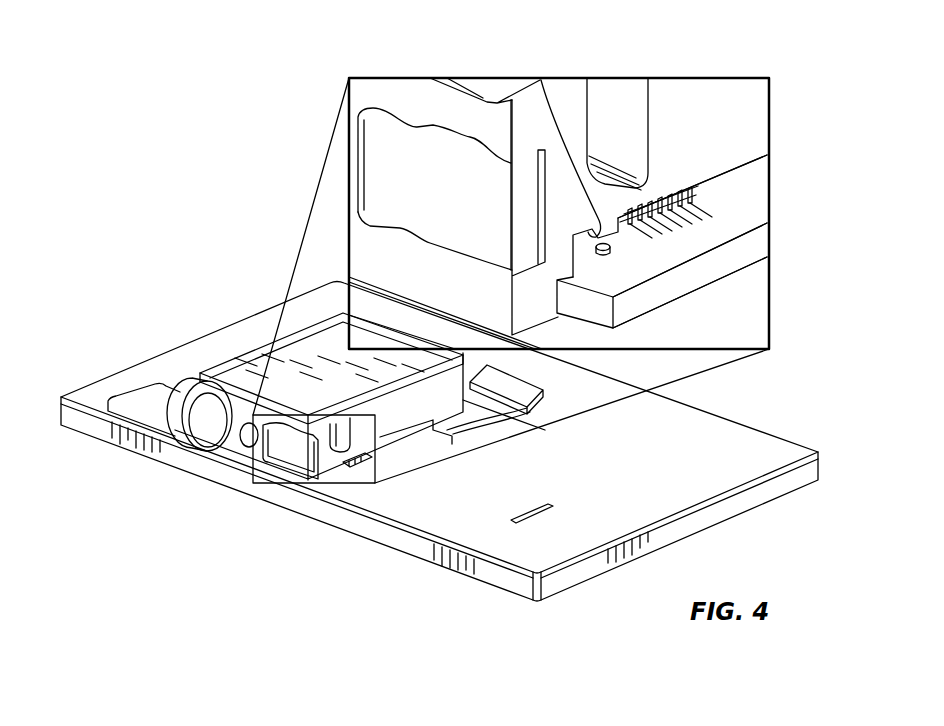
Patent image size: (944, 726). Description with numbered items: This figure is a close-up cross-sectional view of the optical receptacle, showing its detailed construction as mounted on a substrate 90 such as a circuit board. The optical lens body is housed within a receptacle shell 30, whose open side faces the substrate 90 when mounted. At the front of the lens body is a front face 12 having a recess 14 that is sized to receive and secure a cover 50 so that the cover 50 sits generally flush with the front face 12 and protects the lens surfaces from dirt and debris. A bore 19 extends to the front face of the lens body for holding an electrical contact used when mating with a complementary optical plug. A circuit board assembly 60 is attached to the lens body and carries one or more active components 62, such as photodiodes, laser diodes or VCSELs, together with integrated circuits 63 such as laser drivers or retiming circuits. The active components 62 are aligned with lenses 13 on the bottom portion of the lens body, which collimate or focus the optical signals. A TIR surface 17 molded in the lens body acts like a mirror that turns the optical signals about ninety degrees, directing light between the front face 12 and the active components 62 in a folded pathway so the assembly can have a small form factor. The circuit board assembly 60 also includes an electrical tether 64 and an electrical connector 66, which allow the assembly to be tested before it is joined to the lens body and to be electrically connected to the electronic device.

The front face 12 is at (232, 465).
The lens 13 is at (541, 80).
The recess 14 is at (383, 190).
The TIR surface 17 is at (610, 180).
The bore 19 is at (208, 427).
The receptacle shell 30 is at (175, 390).
The cover 50 is at (415, 197).
The circuit board assembly 60 is at (762, 223).
The active component 62 is at (605, 257).
The integrated circuit 63 is at (672, 207).
The electrical tether 64 is at (487, 403).
The electrical connector 66 is at (557, 386).
The substrate 90 is at (820, 460).